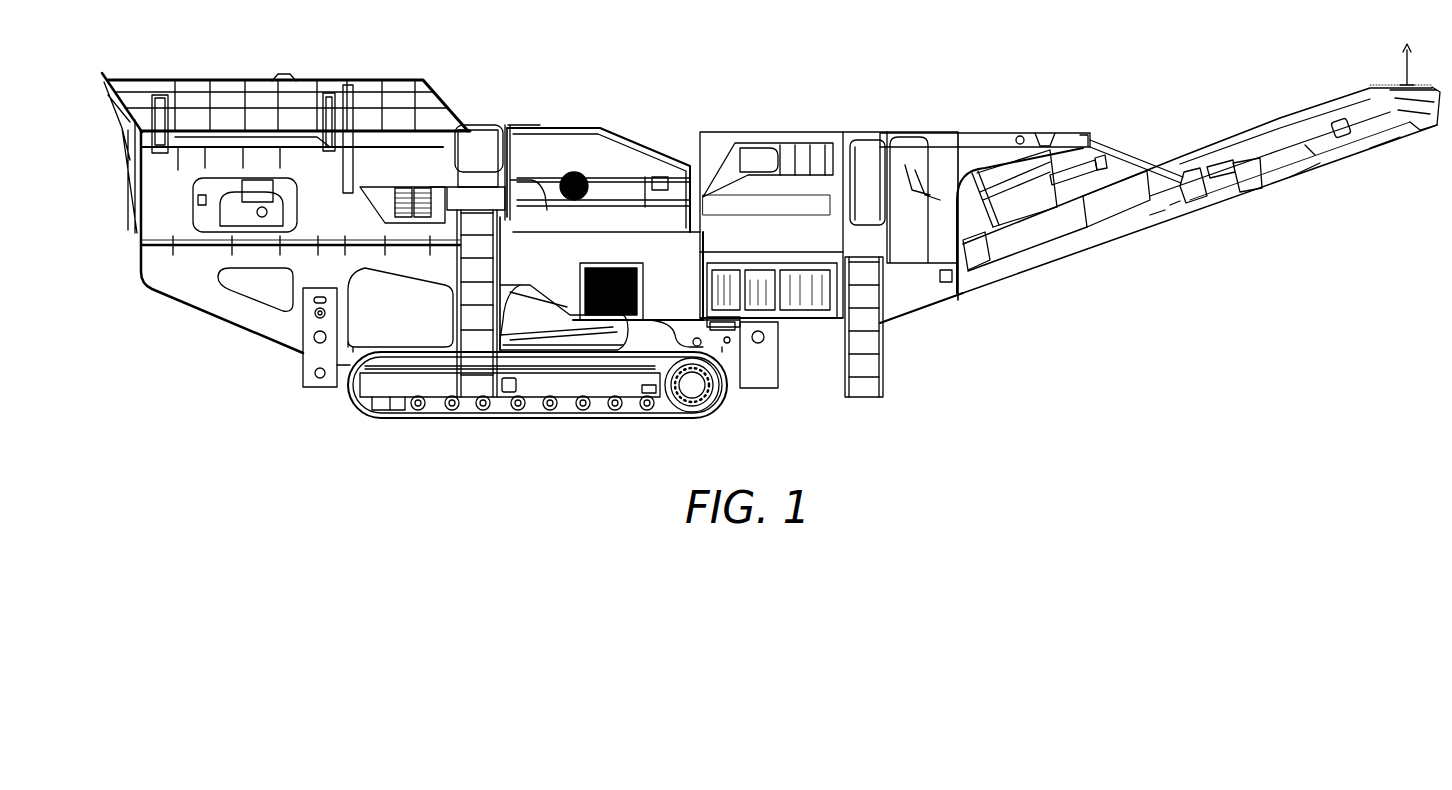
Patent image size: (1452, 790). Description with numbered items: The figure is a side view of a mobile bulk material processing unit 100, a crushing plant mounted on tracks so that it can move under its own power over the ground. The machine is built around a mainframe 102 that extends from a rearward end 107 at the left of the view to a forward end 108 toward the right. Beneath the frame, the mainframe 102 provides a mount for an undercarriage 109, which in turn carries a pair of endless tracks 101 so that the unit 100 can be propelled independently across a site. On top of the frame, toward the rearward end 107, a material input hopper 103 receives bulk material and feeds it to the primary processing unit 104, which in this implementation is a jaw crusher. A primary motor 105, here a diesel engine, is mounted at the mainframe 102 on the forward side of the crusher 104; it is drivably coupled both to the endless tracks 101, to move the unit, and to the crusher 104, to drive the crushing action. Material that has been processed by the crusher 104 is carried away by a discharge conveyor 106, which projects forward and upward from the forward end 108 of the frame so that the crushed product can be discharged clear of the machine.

The mobile bulk material processing unit 100 is at (980, 72).
The endless tracks 101 is at (718, 411).
The mainframe 102 is at (277, 327).
The material input hopper 103 is at (387, 86).
The primary processing unit 104 is at (638, 129).
The primary motor 105 is at (720, 158).
The discharge conveyor 106 is at (1273, 130).
The rearward end 107 is at (138, 259).
The forward end 108 is at (960, 220).
The undercarriage 109 is at (567, 388).